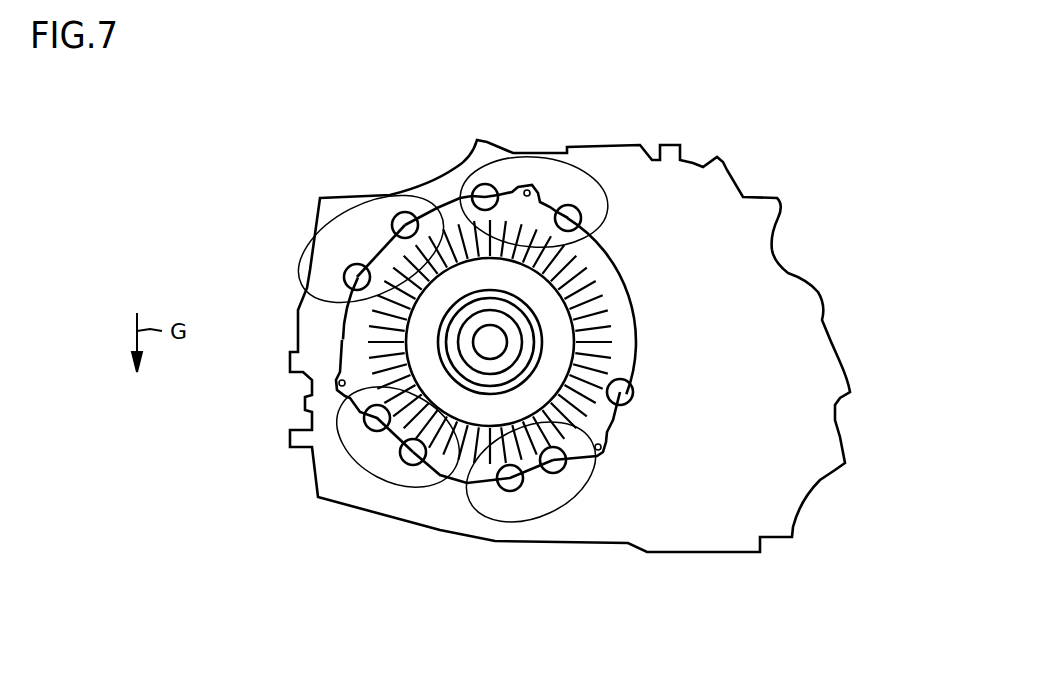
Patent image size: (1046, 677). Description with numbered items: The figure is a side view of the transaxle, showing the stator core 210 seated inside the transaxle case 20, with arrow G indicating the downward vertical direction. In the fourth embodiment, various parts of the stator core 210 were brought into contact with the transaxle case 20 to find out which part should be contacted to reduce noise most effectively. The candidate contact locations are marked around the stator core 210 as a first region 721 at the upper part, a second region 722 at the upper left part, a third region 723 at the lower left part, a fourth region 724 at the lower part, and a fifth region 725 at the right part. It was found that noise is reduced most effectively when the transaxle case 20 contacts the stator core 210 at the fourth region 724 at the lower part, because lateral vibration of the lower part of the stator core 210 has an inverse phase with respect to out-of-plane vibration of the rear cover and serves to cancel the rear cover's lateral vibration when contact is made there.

The transaxle case 20 is at (315, 337).
The stator core 210 is at (617, 297).
The first region 721 is at (549, 134).
The second region 722 is at (286, 208).
The third region 723 is at (343, 487).
The fourth region 724 is at (571, 541).
The fifth region 725 is at (644, 421).